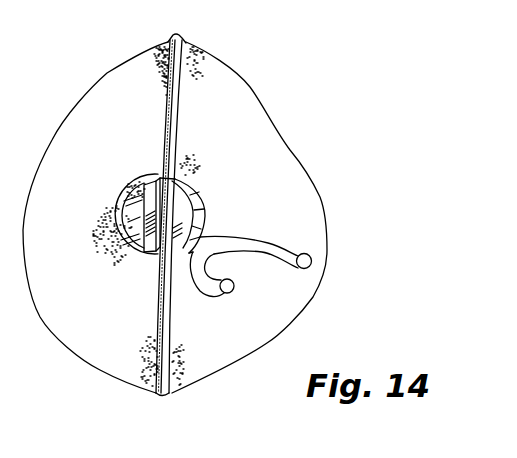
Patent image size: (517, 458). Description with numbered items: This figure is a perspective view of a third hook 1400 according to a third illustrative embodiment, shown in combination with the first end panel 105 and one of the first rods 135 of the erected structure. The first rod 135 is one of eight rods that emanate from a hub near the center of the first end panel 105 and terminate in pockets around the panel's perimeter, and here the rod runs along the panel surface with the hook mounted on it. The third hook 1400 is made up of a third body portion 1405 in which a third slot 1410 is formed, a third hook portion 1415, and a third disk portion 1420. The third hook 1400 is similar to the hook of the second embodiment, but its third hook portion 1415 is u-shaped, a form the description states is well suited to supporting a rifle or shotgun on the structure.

The third hook 1400 is at (280, 186).
The first end panel 105 is at (108, 327).
The first rod 135 is at (165, 92).
The third disk portion 1420 is at (123, 198).
The third body portion 1405 is at (201, 212).
The third slot 1410 is at (179, 183).
The third hook portion 1415 is at (265, 256).